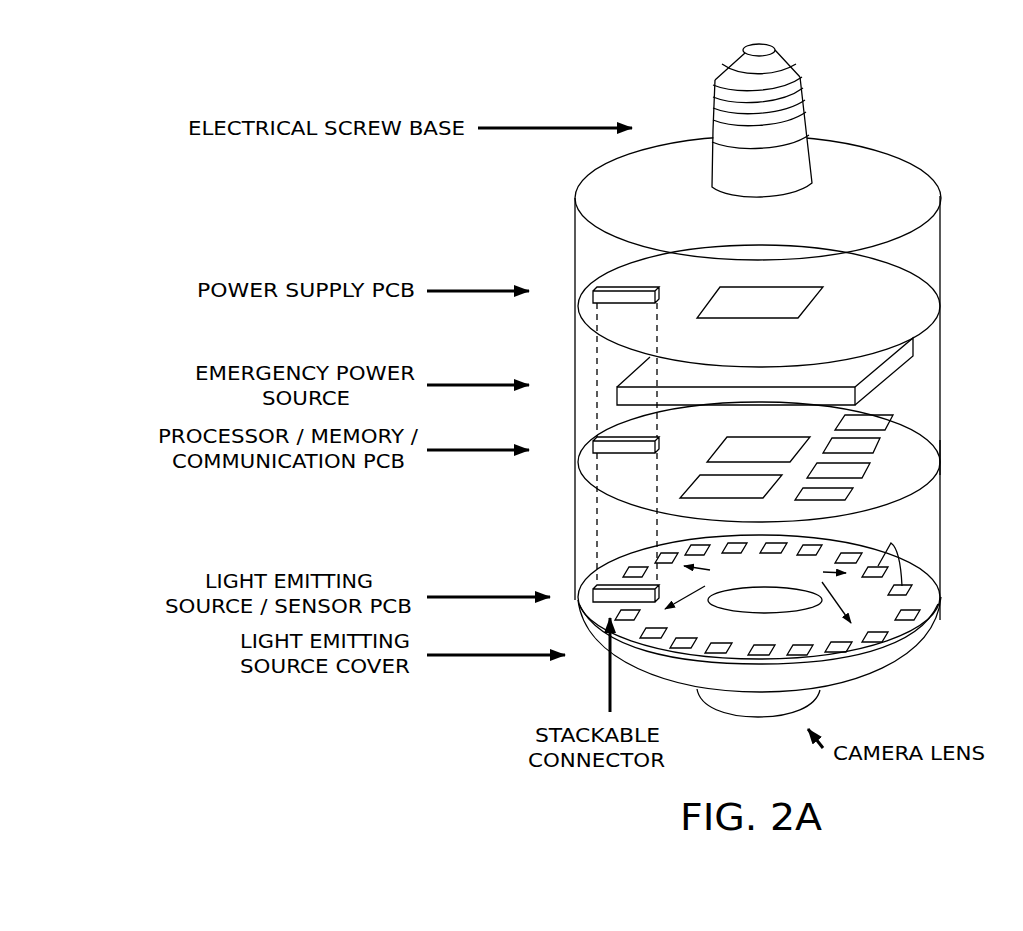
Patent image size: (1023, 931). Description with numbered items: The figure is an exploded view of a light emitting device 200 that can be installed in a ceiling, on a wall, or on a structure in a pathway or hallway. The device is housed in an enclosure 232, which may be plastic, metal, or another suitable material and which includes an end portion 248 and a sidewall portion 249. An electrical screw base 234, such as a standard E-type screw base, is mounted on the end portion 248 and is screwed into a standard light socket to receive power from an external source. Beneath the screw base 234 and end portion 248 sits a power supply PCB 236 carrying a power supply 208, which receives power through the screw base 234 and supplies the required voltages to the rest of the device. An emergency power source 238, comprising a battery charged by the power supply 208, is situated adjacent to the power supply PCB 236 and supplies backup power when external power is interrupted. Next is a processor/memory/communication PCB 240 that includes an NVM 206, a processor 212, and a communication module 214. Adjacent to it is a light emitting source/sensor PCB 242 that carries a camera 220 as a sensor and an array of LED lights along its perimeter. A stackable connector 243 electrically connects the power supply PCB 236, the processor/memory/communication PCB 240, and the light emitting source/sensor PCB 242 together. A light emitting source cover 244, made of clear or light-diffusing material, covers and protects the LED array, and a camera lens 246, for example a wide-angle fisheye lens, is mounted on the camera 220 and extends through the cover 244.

The light emitting device 200 is at (973, 90).
The electrical screw base 234 is at (802, 88).
The enclosure 232 is at (943, 230).
The end portion 248 is at (895, 167).
The stackable connector 243 is at (620, 283).
The power supply 208 is at (760, 302).
The power supply PCB 236 is at (762, 343).
The emergency power source 238 is at (885, 363).
The sidewall portion 249 is at (940, 353).
The communication module 214 is at (758, 449).
The processor 212 is at (731, 486).
The NVM 206 is at (862, 468).
The processor/memory/communication PCB 240 is at (928, 458).
The light emitting source/sensor PCB 242 is at (930, 602).
The camera 220 is at (770, 612).
The light emitting source cover 244 is at (905, 657).
The camera lens 246 is at (813, 692).